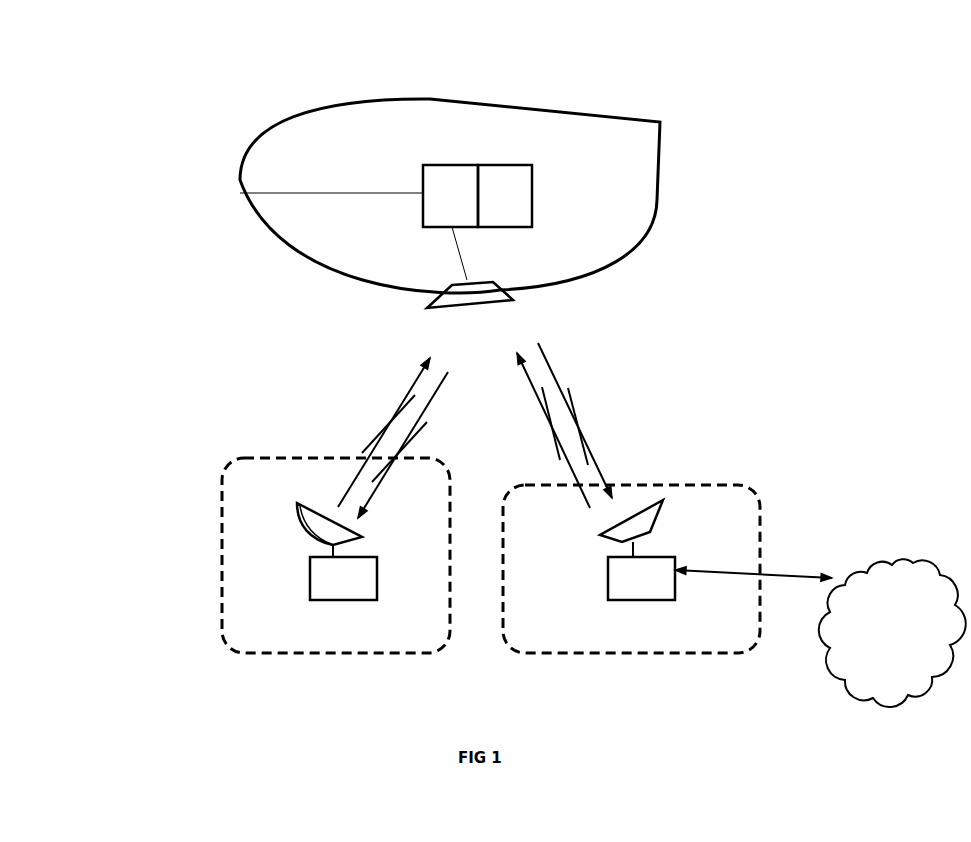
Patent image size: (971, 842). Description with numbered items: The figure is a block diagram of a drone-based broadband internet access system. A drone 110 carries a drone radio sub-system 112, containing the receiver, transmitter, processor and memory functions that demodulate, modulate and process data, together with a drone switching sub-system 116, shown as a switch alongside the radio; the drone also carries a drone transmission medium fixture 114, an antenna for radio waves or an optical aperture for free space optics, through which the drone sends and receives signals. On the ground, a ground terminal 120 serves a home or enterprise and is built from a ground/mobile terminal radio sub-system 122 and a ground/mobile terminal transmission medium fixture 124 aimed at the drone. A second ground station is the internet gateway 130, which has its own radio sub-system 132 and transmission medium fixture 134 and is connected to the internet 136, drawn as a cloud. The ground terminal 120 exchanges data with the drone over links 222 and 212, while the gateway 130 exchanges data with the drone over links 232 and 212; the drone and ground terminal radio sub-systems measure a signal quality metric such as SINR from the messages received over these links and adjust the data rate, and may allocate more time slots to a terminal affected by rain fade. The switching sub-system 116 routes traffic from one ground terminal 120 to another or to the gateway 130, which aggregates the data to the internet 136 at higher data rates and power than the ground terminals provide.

The drone 110 is at (342, 102).
The drone radio sub-system 112 is at (422, 197).
The drone transmission medium fixture 114 is at (512, 303).
The drone switching sub-system 116 is at (537, 203).
The ground terminal 120 is at (217, 570).
The ground/mobile terminal radio sub-system 122 is at (377, 585).
The ground/mobile terminal transmission medium fixture 124 is at (310, 527).
The internet gateway 130 is at (698, 490).
The ground terminal equipment 132 is at (675, 585).
The ground terminal antenna 134 is at (600, 535).
The internet 136 is at (900, 717).
The GT link 212 is at (489, 430).
The GT link 222 is at (384, 432).
The GT link 232 is at (553, 430).